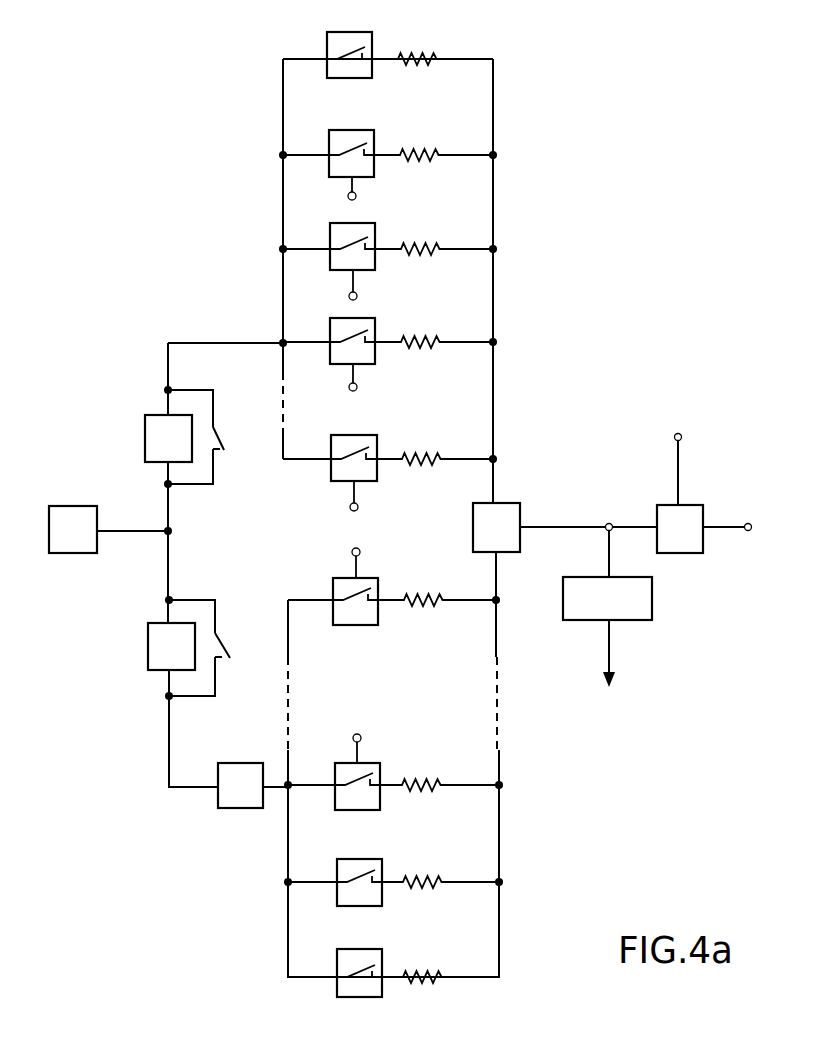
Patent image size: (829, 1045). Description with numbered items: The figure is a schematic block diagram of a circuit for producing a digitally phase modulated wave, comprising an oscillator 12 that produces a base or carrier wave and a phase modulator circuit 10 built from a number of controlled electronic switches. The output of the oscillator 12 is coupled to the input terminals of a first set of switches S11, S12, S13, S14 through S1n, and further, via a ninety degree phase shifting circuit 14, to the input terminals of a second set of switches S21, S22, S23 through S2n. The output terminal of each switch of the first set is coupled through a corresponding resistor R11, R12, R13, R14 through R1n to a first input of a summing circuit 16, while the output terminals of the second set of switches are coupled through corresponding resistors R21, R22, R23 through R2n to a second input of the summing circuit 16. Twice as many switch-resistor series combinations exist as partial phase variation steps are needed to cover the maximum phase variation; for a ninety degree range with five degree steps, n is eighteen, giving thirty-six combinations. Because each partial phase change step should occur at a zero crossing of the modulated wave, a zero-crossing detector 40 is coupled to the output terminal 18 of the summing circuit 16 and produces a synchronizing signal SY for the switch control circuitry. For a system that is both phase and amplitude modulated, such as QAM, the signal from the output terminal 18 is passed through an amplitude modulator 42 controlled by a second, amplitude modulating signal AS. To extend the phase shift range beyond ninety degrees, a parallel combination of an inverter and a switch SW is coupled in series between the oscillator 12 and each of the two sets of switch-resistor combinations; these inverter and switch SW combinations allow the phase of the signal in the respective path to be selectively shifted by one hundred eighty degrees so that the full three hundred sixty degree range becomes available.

The phase modulator circuit 10 is at (245, 544).
The oscillator 12 is at (76, 553).
The 90 degree phase shifting circuit 14 is at (236, 808).
The summing circuit 16 is at (520, 514).
The output terminal 18 is at (608, 519).
The zero-crossing detector 40 is at (629, 610).
The amplitude modulator 42 is at (688, 545).
The switch SW is at (217, 543).
The switch S11 is at (365, 47).
The switch S12 is at (367, 143).
The switch S13 is at (368, 237).
The switch S14 is at (368, 330).
The switch S1n is at (369, 447).
The resistor R11 is at (432, 58).
The resistor R12 is at (428, 153).
The resistor R13 is at (430, 246).
The resistor R14 is at (433, 340).
The resistor R1n is at (431, 457).
The switch S2n is at (371, 588).
The switch S23 is at (373, 773).
The switch S22 is at (375, 870).
The switch S21 is at (375, 965).
The resistor R2n is at (432, 598).
The resistor R23 is at (432, 783).
The resistor R22 is at (432, 880).
The resistor R21 is at (432, 975).
The amplitude modulating signal AS is at (676, 454).
The synchronizing signal SY is at (610, 668).